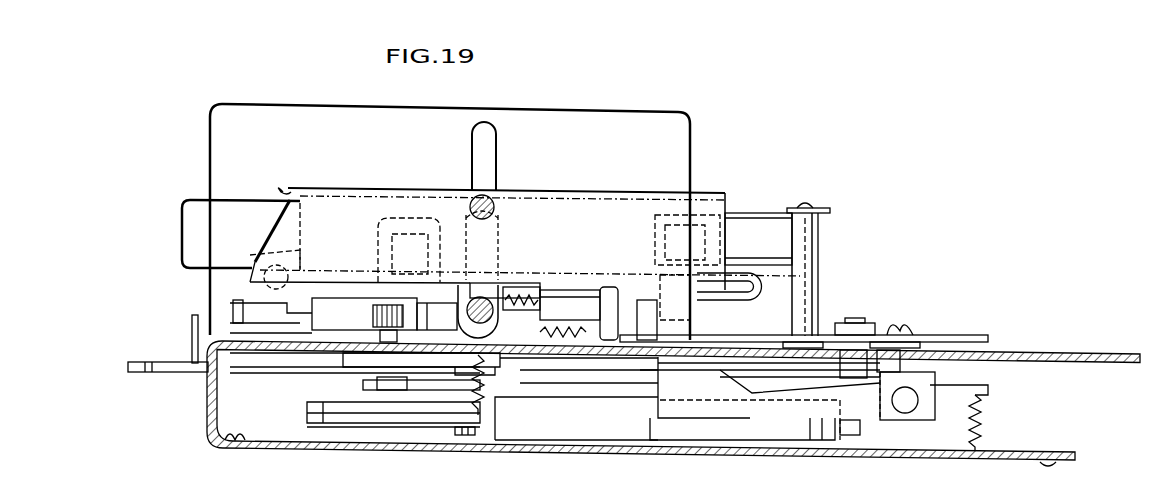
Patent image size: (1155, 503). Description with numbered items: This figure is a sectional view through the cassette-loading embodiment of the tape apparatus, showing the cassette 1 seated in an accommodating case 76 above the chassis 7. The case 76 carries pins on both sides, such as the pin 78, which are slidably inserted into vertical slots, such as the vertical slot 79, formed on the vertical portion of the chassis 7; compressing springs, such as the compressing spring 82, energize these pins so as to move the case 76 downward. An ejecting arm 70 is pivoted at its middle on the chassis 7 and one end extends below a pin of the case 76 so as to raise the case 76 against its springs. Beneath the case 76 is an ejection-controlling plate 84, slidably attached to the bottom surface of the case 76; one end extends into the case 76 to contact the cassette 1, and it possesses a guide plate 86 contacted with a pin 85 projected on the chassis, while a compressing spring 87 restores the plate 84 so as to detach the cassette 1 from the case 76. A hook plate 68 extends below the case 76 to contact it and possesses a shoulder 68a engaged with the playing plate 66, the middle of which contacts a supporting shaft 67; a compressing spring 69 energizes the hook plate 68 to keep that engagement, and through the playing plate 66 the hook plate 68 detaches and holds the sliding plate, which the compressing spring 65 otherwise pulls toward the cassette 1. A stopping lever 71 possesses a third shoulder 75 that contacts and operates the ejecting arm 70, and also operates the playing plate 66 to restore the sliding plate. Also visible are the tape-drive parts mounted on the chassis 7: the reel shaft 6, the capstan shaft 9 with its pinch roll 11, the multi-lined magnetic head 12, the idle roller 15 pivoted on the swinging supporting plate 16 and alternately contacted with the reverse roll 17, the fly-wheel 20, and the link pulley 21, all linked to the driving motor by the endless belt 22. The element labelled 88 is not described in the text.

The cassette 1 is at (180, 215).
The reel shaft 6 is at (402, 218).
The chassis 7 is at (1036, 354).
The capstan shaft 9 is at (733, 190).
The pinch roll 11 is at (803, 208).
The multi-lined magnetic head 12 is at (775, 230).
The idle roller 15 is at (390, 313).
The swinging supporting plate 16 is at (417, 387).
The reverse roll 17 is at (342, 302).
The fly-wheel 20 is at (617, 425).
The link pulley 21 is at (247, 450).
The endless belt 22 is at (407, 418).
The compressing spring 65 is at (493, 402).
The playing plate 66 is at (793, 368).
The supporting shaft 67 is at (853, 320).
The hook plate 68 is at (703, 413).
The shoulder 68a is at (750, 396).
The compressing spring 69 is at (968, 420).
The ejecting arm 70 is at (257, 310).
The stopping lever 71 is at (178, 373).
The third shoulder 75 is at (192, 330).
The accommodating case 76 is at (302, 215).
The pin 78 is at (488, 295).
The vertical slot 79 is at (491, 145).
The compressing spring 82 is at (470, 402).
The ejection-controlling plate 84 is at (625, 335).
The pin 85 is at (572, 300).
The guide plate 86 is at (558, 332).
The compressing spring 87 is at (535, 300).
The plate 88 is at (938, 338).